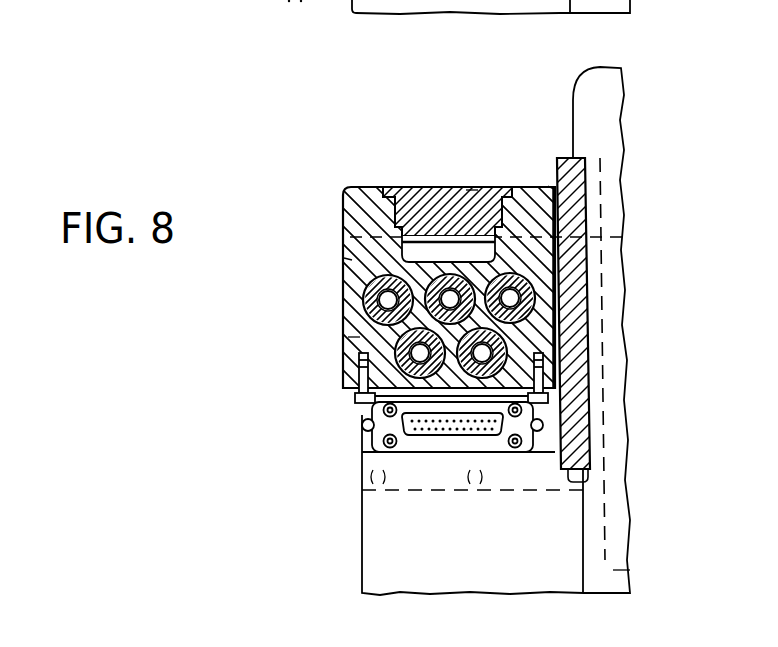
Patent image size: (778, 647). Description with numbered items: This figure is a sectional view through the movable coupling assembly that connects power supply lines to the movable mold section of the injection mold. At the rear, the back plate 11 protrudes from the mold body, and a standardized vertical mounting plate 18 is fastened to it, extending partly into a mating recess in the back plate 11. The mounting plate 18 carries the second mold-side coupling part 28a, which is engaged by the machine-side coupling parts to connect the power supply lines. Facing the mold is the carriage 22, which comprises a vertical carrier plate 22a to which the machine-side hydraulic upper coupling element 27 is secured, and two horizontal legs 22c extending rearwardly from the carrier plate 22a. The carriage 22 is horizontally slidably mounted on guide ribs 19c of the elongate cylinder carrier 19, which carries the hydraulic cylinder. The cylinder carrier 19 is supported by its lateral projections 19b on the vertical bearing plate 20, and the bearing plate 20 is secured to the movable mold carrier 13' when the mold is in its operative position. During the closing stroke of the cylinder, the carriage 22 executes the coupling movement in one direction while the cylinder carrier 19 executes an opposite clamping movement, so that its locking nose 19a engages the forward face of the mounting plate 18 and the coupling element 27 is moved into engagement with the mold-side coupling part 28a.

The back plate 11 is at (378, 558).
The movable mold carrier 13' is at (527, 299).
The mounting plate 18 is at (362, 444).
The cylinder carrier 19 is at (437, 178).
The locking nose 19a is at (345, 259).
The lateral projections 19b is at (553, 188).
The guide ribs 19c is at (478, 190).
The bearing plate 20 is at (557, 156).
The carriage 22 is at (338, 299).
The carrier plate 22a is at (355, 337).
The horizontal legs 22c is at (395, 213).
The hydraulic upper coupling element 27 is at (352, 383).
The second mold-side coupling part 28a is at (366, 432).